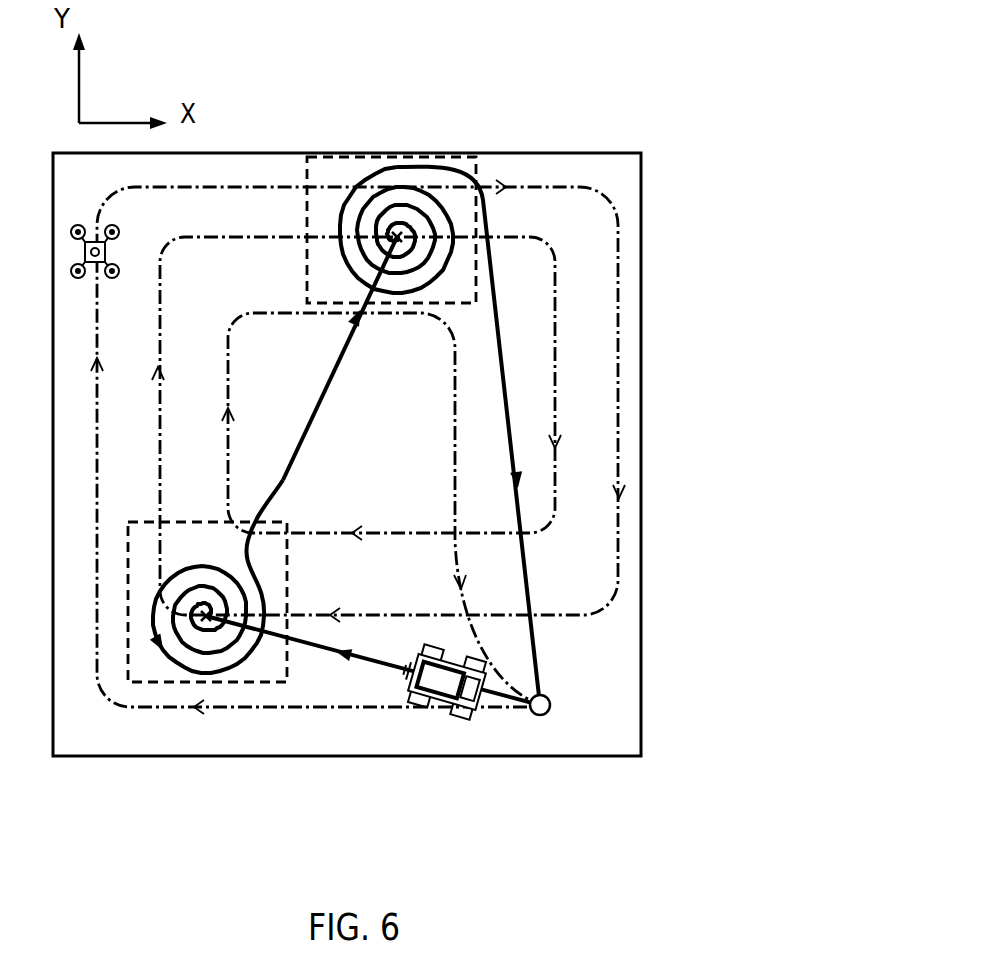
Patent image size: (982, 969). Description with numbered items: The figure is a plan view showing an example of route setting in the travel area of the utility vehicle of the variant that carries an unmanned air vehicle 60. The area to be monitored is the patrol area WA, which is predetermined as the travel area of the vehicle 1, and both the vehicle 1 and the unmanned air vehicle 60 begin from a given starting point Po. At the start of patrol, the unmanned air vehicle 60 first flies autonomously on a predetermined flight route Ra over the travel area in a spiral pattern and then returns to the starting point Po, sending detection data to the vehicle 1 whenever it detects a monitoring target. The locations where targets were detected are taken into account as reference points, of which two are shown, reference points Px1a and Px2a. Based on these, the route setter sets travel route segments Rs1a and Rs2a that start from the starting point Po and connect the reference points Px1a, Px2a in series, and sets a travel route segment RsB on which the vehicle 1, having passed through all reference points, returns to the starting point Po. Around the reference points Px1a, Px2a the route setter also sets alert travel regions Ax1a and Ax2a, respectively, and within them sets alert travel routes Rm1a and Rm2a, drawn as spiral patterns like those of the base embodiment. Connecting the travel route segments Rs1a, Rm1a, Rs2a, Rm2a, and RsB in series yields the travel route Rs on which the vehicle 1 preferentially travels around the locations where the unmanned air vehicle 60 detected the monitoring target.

The patrol area WA is at (563, 152).
The flight route Ra is at (619, 298).
The travel route Rs is at (308, 405).
The alert travel region Ax2a is at (307, 277).
The alert travel region Ax1a is at (287, 552).
The alert travel route Rm2a is at (345, 208).
The alert travel route Rm1a is at (195, 565).
The travel route segment Rs2a is at (327, 385).
The travel route segment RsB is at (526, 567).
The travel route segment Rs1a is at (378, 665).
The reference point Px2a is at (398, 240).
The reference point Px1a is at (208, 616).
The starting point Po is at (552, 712).
The vehicle 1 is at (412, 713).
The unmanned air vehicle 60 is at (72, 231).